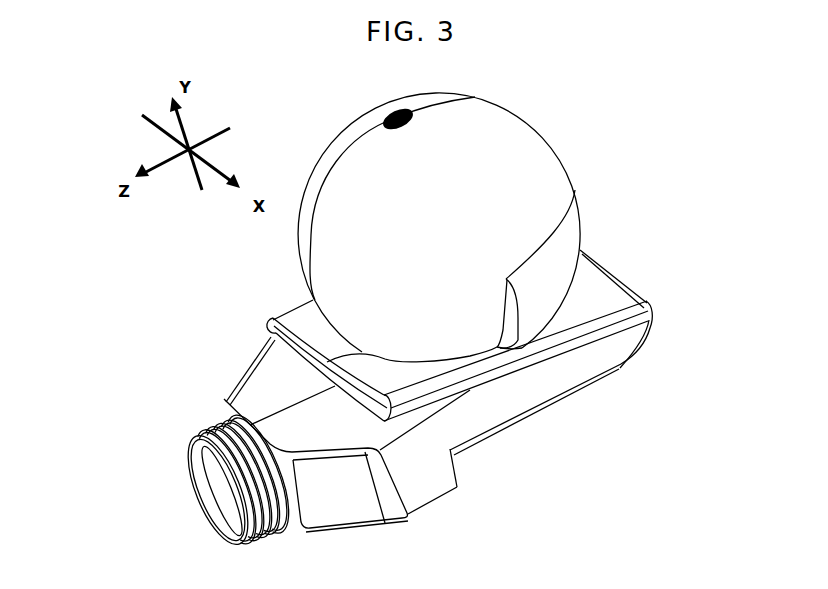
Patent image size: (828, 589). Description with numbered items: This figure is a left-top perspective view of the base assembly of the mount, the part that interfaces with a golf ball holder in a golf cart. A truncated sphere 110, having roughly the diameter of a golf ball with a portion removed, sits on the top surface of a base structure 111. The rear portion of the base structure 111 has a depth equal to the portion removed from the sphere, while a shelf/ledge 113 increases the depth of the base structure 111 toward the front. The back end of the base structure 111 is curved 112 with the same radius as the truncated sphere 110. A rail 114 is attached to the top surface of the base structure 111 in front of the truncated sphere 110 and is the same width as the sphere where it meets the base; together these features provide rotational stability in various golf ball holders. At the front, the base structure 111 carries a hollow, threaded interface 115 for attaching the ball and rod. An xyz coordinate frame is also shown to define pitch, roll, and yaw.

The truncated sphere 110 is at (517, 170).
The base structure 111 is at (603, 313).
The curved back end 112 is at (640, 356).
The shelf/ledge 113 is at (462, 481).
The rail 114 is at (295, 330).
The hollow threaded interface 115 is at (220, 423).